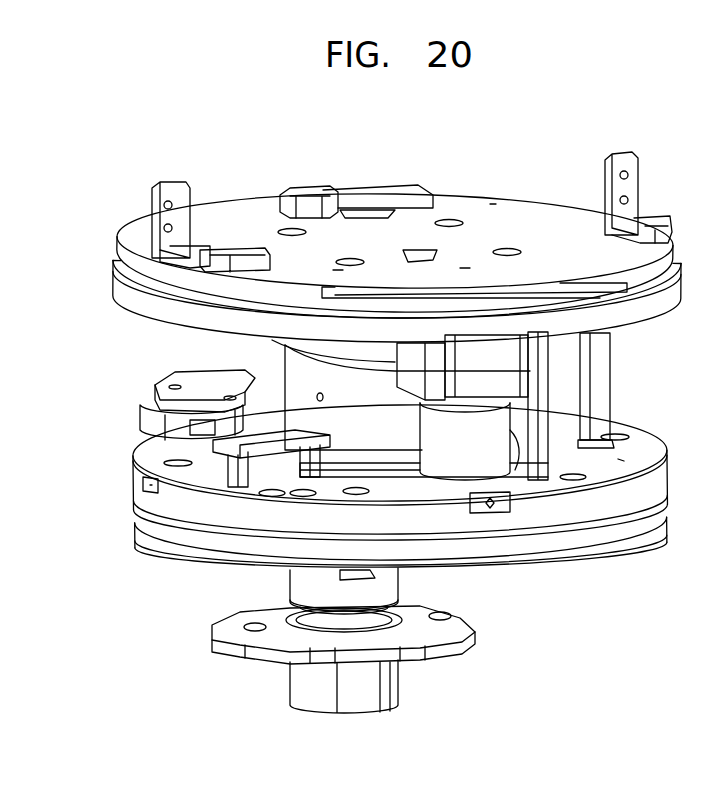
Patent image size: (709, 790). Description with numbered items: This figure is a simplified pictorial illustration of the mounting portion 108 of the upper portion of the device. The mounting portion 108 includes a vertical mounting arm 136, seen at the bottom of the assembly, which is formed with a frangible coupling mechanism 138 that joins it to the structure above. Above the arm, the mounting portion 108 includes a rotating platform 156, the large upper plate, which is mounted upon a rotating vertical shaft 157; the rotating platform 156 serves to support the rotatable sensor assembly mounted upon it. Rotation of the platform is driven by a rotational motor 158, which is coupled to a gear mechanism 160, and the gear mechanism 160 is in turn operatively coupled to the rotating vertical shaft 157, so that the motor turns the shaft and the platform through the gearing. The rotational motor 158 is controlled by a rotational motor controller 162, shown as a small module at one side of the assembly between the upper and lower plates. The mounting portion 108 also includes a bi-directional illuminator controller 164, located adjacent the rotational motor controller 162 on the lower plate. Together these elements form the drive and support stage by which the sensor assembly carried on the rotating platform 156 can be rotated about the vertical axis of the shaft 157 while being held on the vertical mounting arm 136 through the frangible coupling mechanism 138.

The mounting portion 108 is at (97, 265).
The vertical mounting arm 136 is at (446, 692).
The frangible coupling mechanism 138 is at (297, 580).
The rotating platform 156 is at (143, 238).
The rotating vertical shaft 157 is at (302, 373).
The rotational motor 158 is at (506, 360).
The gear mechanism 160 is at (490, 430).
The rotational motor controller 162 is at (172, 383).
The bi-directional illuminator controller 164 is at (263, 437).